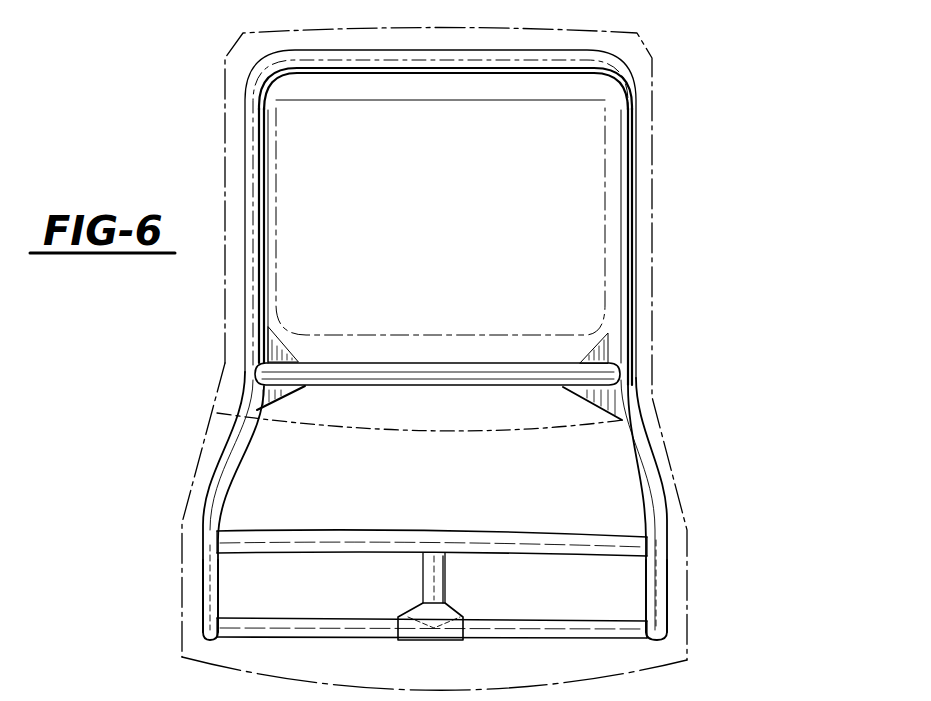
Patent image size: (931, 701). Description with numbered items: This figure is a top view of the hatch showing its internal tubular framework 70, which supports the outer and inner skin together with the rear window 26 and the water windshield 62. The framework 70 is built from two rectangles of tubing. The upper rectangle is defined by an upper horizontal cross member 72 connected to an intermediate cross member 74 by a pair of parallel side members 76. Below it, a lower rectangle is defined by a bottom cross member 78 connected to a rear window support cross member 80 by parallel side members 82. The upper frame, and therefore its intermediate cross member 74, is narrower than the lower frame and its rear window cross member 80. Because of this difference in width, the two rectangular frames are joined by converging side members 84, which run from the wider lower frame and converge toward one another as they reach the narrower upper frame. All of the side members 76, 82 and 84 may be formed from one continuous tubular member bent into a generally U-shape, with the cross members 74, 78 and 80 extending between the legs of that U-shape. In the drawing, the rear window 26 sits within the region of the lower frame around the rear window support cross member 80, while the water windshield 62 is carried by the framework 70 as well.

The rear window 26 is at (403, 430).
The water windshield 62 is at (600, 350).
The tubular framework 70 is at (619, 79).
The upper horizontal cross member 72 is at (516, 77).
The intermediate cross member 74 is at (435, 372).
The parallel side members 76 is at (262, 160).
The bottom cross member 78 is at (290, 628).
The rear window support cross member 80 is at (400, 537).
The parallel side members 82 is at (203, 587).
The converging side members 84 is at (652, 462).